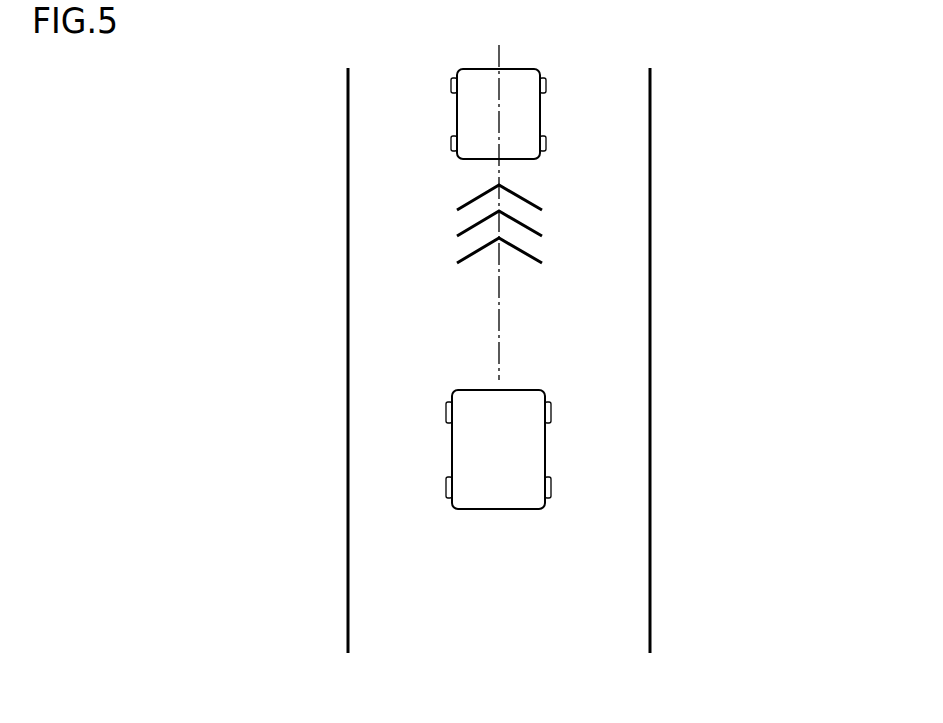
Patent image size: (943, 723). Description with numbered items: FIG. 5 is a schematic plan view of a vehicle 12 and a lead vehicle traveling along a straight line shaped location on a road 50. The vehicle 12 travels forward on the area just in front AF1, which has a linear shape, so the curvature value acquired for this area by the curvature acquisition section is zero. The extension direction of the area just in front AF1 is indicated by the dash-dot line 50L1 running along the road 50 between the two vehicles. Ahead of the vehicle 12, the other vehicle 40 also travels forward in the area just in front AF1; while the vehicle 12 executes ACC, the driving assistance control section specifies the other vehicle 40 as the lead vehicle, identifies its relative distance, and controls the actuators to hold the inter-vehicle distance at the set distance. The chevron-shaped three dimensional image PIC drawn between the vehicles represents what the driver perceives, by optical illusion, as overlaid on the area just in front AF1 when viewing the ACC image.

The road 50 is at (370, 148).
The extension direction of the area just in front 50L1 is at (500, 350).
The other vehicle 40 is at (532, 112).
The three dimensional image PIC is at (553, 215).
The area just in front AF1 is at (467, 300).
The vehicle 12 is at (460, 442).